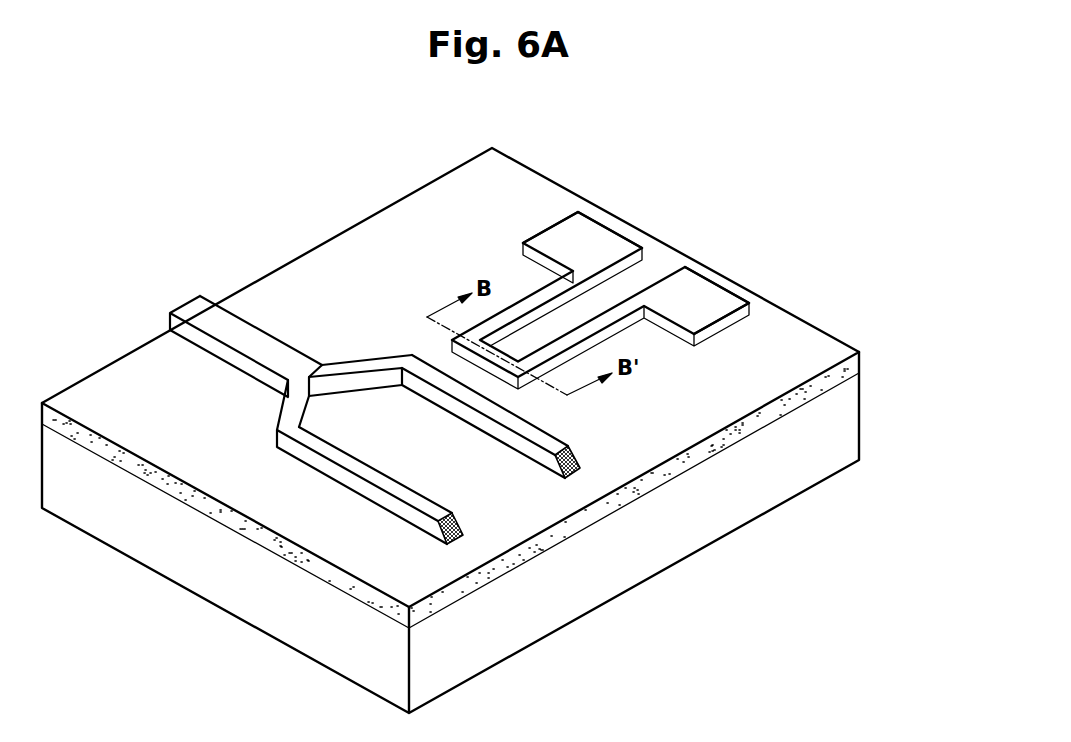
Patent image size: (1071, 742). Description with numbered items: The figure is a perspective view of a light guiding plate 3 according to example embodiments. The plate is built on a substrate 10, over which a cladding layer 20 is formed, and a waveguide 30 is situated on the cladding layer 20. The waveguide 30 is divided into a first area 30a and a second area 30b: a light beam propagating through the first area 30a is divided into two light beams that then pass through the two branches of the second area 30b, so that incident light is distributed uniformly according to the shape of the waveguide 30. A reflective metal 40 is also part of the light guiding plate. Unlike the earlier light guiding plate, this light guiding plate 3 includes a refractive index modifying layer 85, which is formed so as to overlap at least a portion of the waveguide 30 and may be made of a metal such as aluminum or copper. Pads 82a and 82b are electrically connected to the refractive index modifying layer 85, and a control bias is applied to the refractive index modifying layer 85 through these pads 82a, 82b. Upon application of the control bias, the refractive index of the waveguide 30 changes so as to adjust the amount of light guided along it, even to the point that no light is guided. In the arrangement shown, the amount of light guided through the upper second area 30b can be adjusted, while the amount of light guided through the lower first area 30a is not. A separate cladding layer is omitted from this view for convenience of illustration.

The light guiding plate 3 is at (862, 277).
The substrate 10 is at (847, 420).
The cladding layer 20 is at (862, 358).
The waveguide 30 is at (368, 175).
The first area 30a is at (263, 345).
The second area 30b is at (422, 372).
The reflective metal 40 is at (583, 462).
The pad 82a is at (592, 240).
The pad 82b is at (700, 297).
The refractive index modifying layer 85 is at (501, 356).